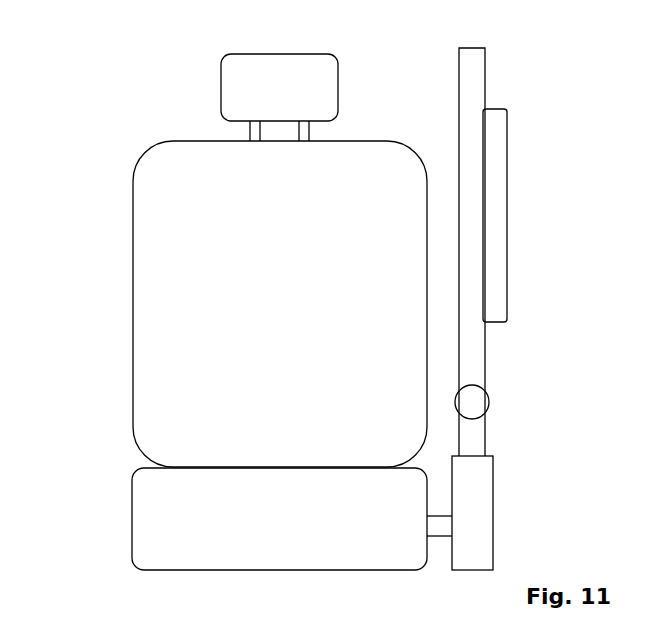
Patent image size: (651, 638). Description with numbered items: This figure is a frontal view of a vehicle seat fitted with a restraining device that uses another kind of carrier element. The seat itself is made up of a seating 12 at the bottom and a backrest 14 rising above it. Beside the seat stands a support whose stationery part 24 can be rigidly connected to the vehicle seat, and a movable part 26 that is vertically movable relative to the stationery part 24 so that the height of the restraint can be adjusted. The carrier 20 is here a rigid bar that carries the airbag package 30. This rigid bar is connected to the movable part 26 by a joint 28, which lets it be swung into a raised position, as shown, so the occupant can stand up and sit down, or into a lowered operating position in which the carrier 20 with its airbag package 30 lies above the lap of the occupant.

The seating 12 is at (188, 518).
The backrest 14 is at (203, 313).
The carrier element 20 is at (469, 100).
The stationery part 24 is at (473, 496).
The movable part 26 is at (470, 438).
The joint 28 is at (470, 400).
The airbag package 30 is at (495, 195).